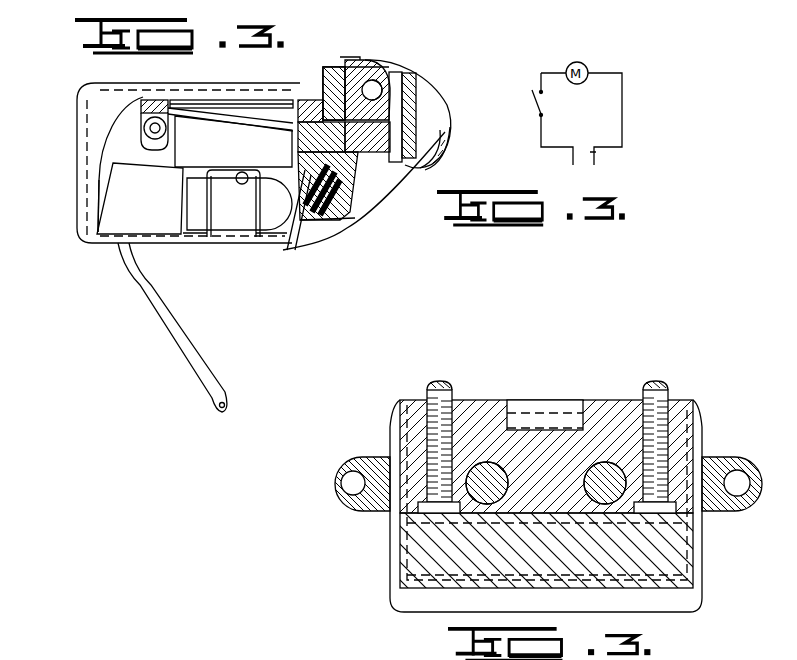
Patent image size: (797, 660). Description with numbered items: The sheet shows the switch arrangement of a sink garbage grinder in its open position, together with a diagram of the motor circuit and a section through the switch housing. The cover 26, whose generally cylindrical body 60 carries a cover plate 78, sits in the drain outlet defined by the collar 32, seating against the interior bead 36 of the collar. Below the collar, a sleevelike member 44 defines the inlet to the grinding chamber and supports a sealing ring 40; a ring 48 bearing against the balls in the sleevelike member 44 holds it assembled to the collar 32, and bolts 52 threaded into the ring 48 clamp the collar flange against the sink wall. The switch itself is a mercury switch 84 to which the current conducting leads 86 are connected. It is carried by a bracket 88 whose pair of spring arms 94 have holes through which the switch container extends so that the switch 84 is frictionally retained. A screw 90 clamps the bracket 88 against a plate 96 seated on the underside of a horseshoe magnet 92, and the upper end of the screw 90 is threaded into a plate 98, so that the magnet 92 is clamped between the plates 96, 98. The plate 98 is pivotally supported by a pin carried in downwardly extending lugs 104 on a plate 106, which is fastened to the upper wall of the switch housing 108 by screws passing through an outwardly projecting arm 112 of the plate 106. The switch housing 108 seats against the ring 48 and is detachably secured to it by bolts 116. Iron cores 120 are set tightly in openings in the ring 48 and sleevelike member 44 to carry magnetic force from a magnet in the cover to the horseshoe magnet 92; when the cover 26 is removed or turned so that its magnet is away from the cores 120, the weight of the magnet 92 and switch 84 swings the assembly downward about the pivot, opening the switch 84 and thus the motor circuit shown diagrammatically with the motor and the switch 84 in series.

In FIG. 3, the cover 26 is at (447, 94).
In FIG. 3, the collar 32 is at (366, 59).
In FIG. 3, the interior bead 36 is at (385, 68).
In FIG. 3, the sealing ring 40 is at (330, 218).
In FIG. 3, the sleevelike member 44 is at (356, 218).
In FIG. 3, the ring 48 is at (326, 75).
In FIG. 5, the bolts 52 is at (447, 386).
In FIG. 3, the body 60 is at (412, 85).
In FIG. 3, the cover plate 78 is at (448, 128).
In FIG. 3, the mercury switch 84 is at (232, 226).
In FIG. 4, the mercury switch 84 is at (534, 114).
In FIG. 3, the current conducting leads 86 is at (140, 283).
In FIG. 3, the bracket 88 is at (187, 180).
In FIG. 3, the screw 90 is at (247, 172).
In FIG. 3, the horseshoe magnet 92 is at (174, 147).
In FIG. 3, the arms 94 is at (202, 235).
In FIG. 3, the plate 96 is at (228, 172).
In FIG. 3, the plate 98 is at (212, 110).
In FIG. 3, the lugs 104 is at (143, 100).
In FIG. 3, the plate 106 is at (262, 100).
In FIG. 5, the switch housing 108 is at (392, 598).
In FIG. 3, the arm 112 is at (213, 102).
In FIG. 5, the bolts 116 is at (738, 476).
In FIG. 3, the iron cores 120 is at (378, 152).
In FIG. 5, the iron cores 120 is at (598, 465).